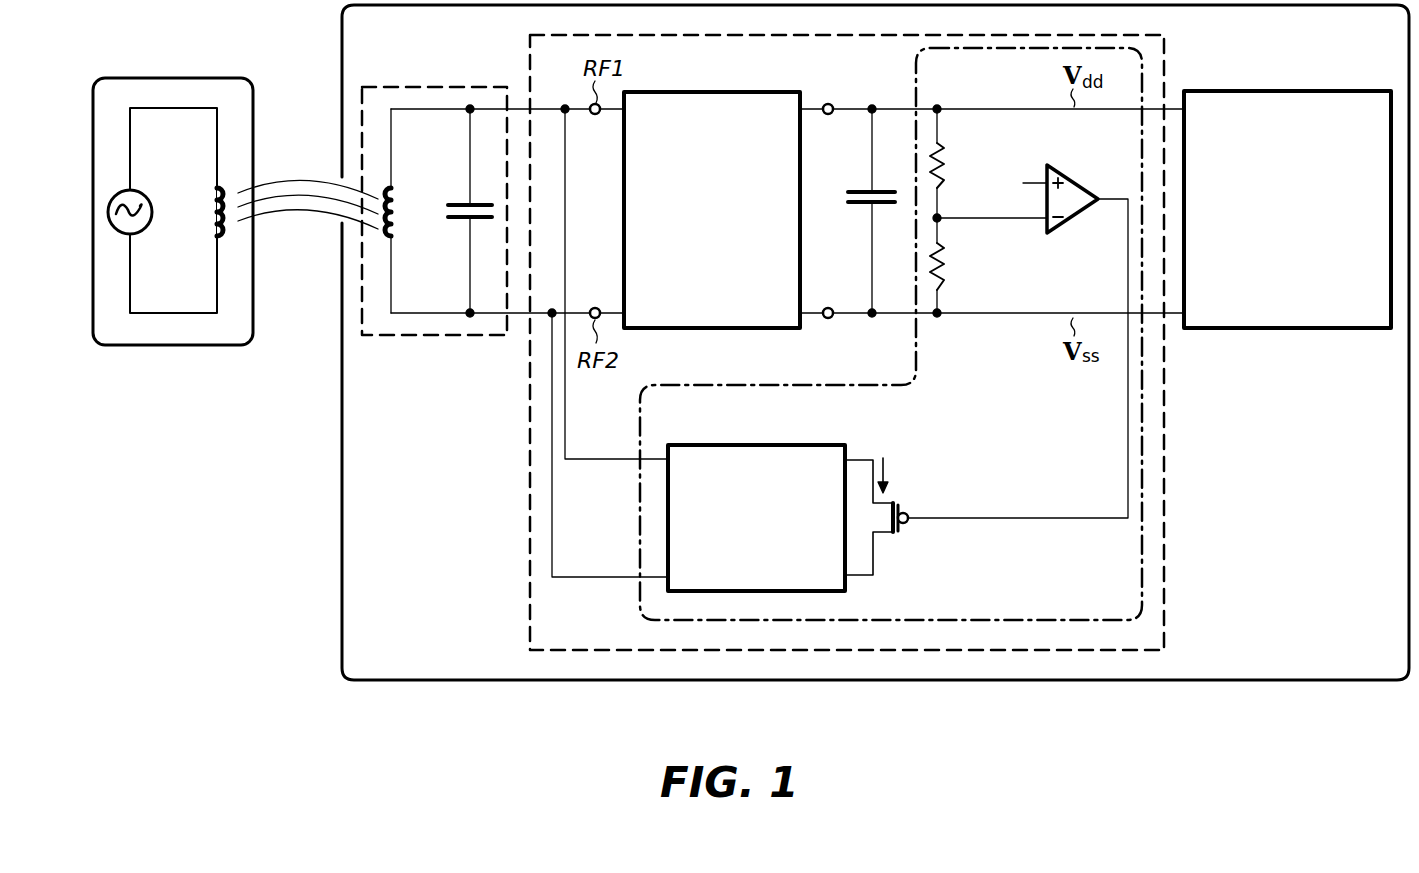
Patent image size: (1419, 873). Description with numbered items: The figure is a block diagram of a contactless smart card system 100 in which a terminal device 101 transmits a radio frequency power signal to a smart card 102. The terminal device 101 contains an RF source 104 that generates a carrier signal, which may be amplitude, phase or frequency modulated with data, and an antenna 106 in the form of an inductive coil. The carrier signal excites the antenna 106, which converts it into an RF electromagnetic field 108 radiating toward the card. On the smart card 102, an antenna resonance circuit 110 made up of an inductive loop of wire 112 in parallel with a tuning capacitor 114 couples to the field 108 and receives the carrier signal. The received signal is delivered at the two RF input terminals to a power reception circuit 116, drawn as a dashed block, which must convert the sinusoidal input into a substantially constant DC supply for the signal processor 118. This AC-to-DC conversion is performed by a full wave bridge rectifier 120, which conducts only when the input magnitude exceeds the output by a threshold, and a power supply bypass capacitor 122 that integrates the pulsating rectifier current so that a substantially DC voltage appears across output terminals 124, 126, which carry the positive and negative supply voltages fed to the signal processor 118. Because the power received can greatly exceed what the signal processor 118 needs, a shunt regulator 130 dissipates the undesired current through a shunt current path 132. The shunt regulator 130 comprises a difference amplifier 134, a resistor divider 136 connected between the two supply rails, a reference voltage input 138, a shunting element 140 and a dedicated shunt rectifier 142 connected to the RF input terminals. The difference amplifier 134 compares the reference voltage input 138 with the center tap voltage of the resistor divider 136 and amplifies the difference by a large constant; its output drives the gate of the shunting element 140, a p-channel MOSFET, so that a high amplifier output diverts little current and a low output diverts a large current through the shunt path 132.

The contactless smart card system 100 is at (160, 473).
The terminal device 101 is at (177, 78).
The smart card 102 is at (1286, 682).
The RF source 104 is at (141, 193).
The antenna 106 is at (214, 228).
The RF electromagnetic field 108 is at (294, 182).
The antenna resonance circuit 110 is at (435, 86).
The inductive loop of wire 112 is at (396, 229).
The tuning capacitor 114 is at (452, 204).
The power reception circuit 116 is at (530, 470).
The signal processor 118 is at (1290, 91).
The full wave bridge rectifier 120 is at (714, 91).
The power supply bypass capacitor 122 is at (850, 191).
The output terminal 124 is at (831, 102).
The output terminal 126 is at (828, 320).
The shunt regulator 130 is at (639, 516).
The shunt current path 132 is at (885, 465).
The difference amplifier 134 is at (1085, 182).
The resistor divider 136 is at (942, 222).
The reference voltage input 138 is at (1025, 180).
The shunting element 140 is at (893, 536).
The shunt rectifier 142 is at (760, 445).